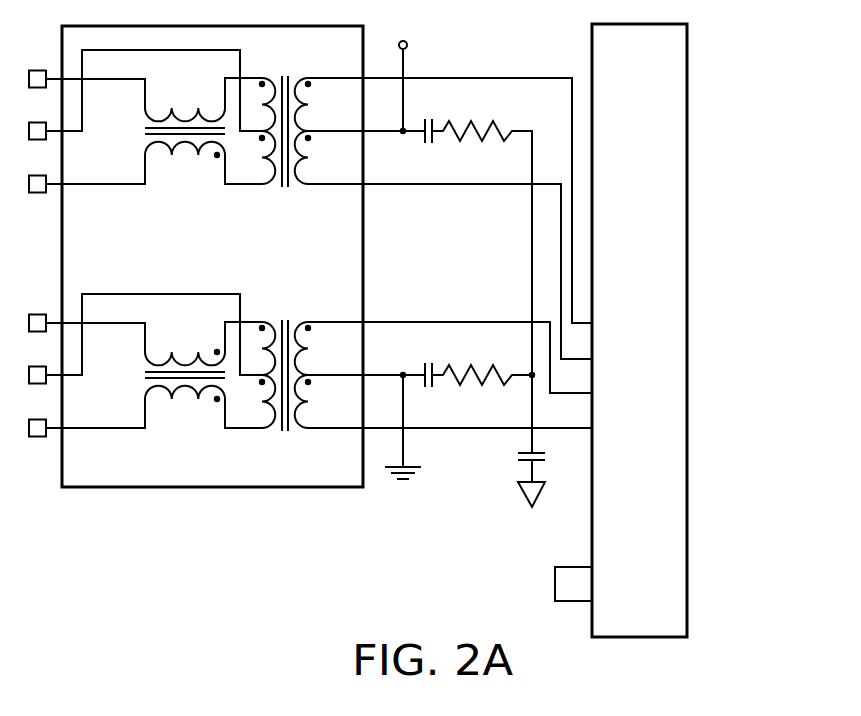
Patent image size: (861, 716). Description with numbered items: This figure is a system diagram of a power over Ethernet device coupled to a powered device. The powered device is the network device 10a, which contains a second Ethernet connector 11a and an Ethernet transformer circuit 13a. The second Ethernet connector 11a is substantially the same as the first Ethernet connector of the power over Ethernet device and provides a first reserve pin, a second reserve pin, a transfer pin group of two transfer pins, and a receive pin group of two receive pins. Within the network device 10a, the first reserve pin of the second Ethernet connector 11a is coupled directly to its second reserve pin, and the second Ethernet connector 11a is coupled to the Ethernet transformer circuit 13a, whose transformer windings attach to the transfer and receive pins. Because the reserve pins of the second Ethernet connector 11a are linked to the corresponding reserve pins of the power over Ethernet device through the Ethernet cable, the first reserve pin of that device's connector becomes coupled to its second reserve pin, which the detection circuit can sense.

The network device 10a is at (416, 345).
The second Ethernet connector 11a is at (688, 262).
The Ethernet transformer circuit 13a is at (138, 489).